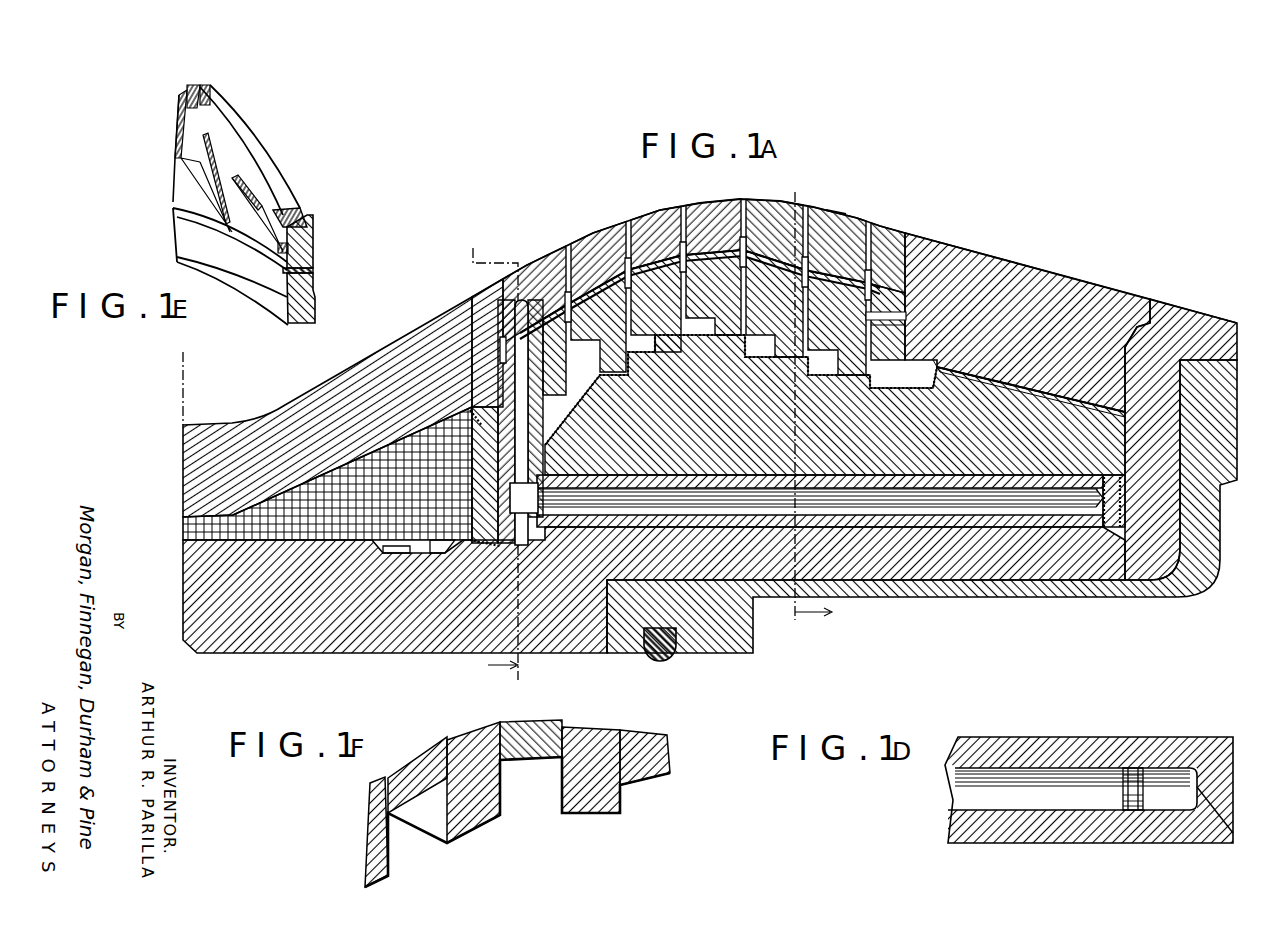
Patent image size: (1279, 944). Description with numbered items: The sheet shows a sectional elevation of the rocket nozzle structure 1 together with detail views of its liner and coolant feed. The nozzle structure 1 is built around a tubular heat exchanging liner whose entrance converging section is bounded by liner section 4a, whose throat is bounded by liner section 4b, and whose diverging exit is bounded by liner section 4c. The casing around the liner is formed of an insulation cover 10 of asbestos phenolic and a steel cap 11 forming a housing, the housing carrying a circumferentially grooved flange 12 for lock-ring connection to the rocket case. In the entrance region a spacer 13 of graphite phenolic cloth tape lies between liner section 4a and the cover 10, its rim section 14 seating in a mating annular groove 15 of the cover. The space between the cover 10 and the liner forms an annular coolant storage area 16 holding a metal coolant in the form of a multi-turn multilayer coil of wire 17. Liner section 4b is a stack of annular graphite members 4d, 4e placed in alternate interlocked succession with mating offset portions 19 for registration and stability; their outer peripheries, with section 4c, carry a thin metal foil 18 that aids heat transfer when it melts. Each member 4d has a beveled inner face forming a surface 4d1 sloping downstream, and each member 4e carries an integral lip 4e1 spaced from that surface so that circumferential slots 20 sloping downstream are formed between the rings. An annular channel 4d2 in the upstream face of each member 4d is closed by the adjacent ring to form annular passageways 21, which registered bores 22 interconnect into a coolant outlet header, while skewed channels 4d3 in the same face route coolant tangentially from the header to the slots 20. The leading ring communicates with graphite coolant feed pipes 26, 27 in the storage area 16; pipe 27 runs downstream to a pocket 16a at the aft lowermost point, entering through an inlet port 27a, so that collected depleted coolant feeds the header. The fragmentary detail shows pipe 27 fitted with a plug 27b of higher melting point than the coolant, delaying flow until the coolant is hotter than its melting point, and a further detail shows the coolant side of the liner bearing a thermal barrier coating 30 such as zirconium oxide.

In FIG. 1A, the nozzle structure 1 is at (944, 619).
In FIG. 1A, the liner section 4a is at (312, 395).
In FIG. 1A, the liner section 4b is at (598, 218).
In FIG. 1F, the liner section 4b is at (352, 809).
In FIG. 1A, the liner section 4c is at (958, 258).
In FIG. 1A, the annular graphite member 4d is at (902, 343).
In FIG. 1A, the beveled surface 4d1 is at (764, 218).
In FIG. 1E, the beveled surface 4d1 is at (186, 88).
In FIG. 1E, the annular channel 4d2 is at (198, 160).
In FIG. 1A, the channels 4d3 is at (833, 212).
In FIG. 1E, the channels 4d3 is at (234, 186).
In FIG. 1A, the annular graphite member 4e is at (840, 368).
In FIG. 1A, the integral lip 4e1 is at (812, 216).
In FIG. 1A, the insulation cover 10 is at (432, 652).
In FIG. 1A, the cap 11 is at (1032, 598).
In FIG. 1A, the circumferentially grooved flange 12 is at (700, 655).
In FIG. 1A, the spacer 13 is at (327, 473).
In FIG. 1A, the rim section 14 is at (405, 553).
In FIG. 1A, the annular groove 15 is at (440, 553).
In FIG. 1A, the coolant storage area 16 is at (1008, 390).
In FIG. 1A, the pocket 16a is at (1124, 528).
In FIG. 1A, the coil of wire 17 is at (592, 427).
In FIG. 1A, the metal foil layer 18 is at (853, 372).
In FIG. 1A, the offset portions 19 is at (895, 318).
In FIG. 1E, the offset portions 19 is at (174, 212).
In FIG. 1A, the circumferential slots 20 is at (638, 214).
In FIG. 1A, the annular passageways 21 is at (760, 256).
In FIG. 1A, the registered bores 22 is at (780, 266).
In FIG. 1E, the registered bores 22 is at (314, 271).
In FIG. 1A, the coolant feed pipe 26 is at (498, 480).
In FIG. 1A, the coolant feed pipe 27 is at (630, 476).
In FIG. 1D, the coolant feed pipe 27 is at (992, 742).
In FIG. 1A, the inlet port 27a is at (1100, 502).
In FIG. 1D, the inlet port 27a is at (1218, 843).
In FIG. 1D, the plug 27b is at (1125, 793).
In FIG. 1F, the coating 30 is at (462, 832).